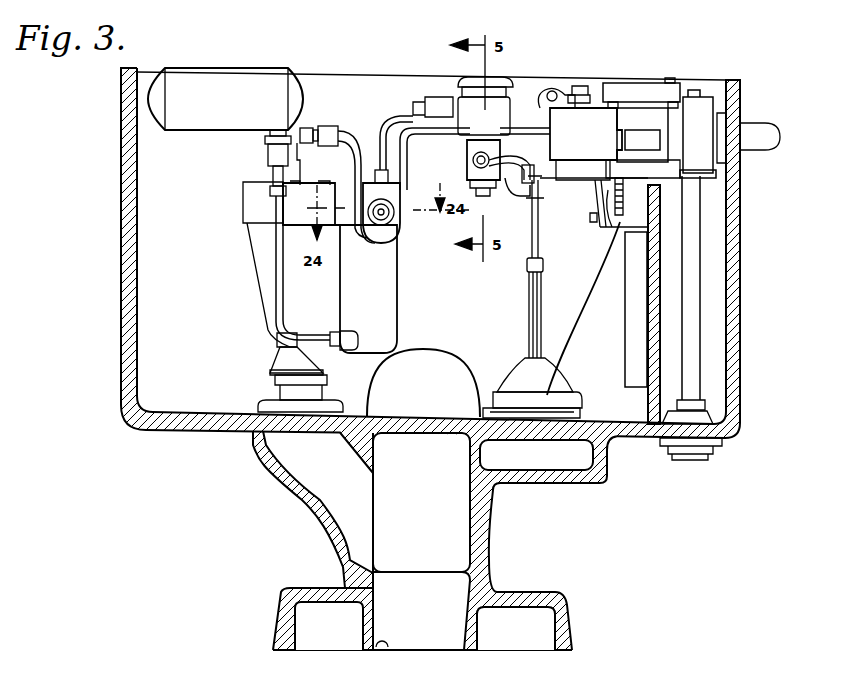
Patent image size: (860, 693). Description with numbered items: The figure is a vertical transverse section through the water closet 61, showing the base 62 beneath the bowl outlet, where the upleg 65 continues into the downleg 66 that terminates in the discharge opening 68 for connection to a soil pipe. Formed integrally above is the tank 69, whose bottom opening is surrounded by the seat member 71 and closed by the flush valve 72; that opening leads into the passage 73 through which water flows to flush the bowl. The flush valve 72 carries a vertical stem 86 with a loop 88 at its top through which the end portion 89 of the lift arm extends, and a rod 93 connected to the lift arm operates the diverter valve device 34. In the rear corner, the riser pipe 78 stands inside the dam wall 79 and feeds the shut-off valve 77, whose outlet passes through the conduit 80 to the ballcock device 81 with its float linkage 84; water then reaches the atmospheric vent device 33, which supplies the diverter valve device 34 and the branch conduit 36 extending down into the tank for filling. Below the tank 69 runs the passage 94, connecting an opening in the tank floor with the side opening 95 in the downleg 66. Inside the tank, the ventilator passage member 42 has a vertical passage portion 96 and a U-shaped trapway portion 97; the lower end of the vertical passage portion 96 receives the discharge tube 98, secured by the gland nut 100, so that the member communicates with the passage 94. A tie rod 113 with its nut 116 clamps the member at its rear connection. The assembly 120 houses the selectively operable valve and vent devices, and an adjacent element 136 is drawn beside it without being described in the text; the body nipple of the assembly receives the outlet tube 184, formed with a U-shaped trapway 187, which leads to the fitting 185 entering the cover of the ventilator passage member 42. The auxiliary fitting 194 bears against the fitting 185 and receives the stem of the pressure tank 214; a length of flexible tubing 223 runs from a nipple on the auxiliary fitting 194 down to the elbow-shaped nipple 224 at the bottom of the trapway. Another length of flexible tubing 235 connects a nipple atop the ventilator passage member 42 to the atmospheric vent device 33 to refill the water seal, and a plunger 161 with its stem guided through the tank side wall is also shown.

The atmospheric vent device 33 is at (662, 80).
The diverter valve device 34 is at (620, 238).
The branch conduit 36 is at (626, 307).
The ventilator passage member 42 is at (276, 336).
The water closet 61 is at (200, 457).
The base 62 is at (280, 598).
The upleg 65 is at (445, 365).
The downleg 66 is at (482, 543).
The opening 68 is at (380, 650).
The tank 69 is at (120, 288).
The seat member 71 is at (581, 414).
The flush valve 72 is at (557, 390).
The passage 73 is at (541, 463).
The shut-off valve 77 is at (716, 104).
The riser pipe 78 is at (695, 300).
The dam wall 79 is at (626, 344).
The conduit 80 is at (637, 130).
The ballcock device 81 is at (581, 100).
The linkage 84 is at (535, 100).
The stem 86 is at (543, 252).
The loop 88 is at (541, 200).
The end portion 89 is at (518, 196).
The rod 93 is at (604, 196).
The passage 94 is at (300, 470).
The side opening 95 is at (378, 468).
The vertical passage portion 96 is at (285, 284).
The trapway portion 97 is at (395, 295).
The discharge tube 98 is at (283, 355).
The gland nut 100 is at (276, 383).
The tie rod 113 is at (378, 218).
The nut 116 is at (384, 224).
The assembly 120 is at (465, 77).
The valve block 136 is at (500, 168).
The plunger 161 is at (765, 140).
The outlet tube 184 is at (350, 127).
The fitting 185 is at (313, 156).
The U-shaped trapway 187 is at (402, 232).
The auxiliary fitting 194 is at (264, 155).
The pressure tank 214 is at (232, 75).
The flexible tubing 223 is at (272, 247).
The elbow-shaped nipple 224 is at (358, 326).
The flexible tubing 235 is at (380, 136).